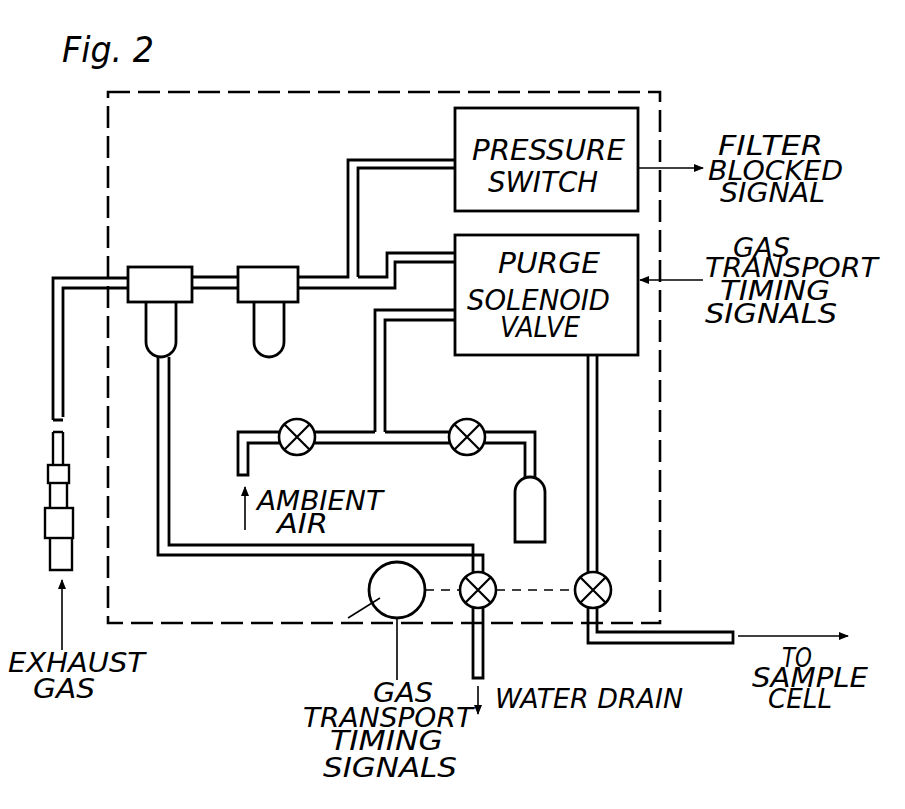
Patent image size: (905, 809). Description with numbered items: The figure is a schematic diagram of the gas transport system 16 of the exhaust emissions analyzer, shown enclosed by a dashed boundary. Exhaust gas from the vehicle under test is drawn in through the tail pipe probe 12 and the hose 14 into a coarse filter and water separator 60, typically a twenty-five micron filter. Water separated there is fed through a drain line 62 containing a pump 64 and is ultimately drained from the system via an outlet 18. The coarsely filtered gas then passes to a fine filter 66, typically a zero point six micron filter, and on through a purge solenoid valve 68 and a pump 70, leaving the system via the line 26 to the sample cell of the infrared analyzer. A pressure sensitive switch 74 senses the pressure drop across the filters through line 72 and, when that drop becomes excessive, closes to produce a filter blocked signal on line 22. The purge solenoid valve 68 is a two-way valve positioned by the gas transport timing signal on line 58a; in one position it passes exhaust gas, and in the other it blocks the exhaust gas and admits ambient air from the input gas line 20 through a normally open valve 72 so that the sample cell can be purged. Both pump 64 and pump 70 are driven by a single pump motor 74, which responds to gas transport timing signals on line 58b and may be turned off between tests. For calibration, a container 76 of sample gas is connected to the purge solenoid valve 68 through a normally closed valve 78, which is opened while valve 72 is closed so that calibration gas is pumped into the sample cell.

The tail pipe probe 12 is at (72, 527).
The hose 14 is at (53, 345).
The gas transport system 16 is at (101, 193).
The outlet 18 is at (486, 648).
The input gas line 20 is at (238, 466).
The line 22 is at (672, 163).
The line 26 is at (667, 645).
The line 58a is at (670, 272).
The line 58b is at (397, 672).
The coarse filter and water separator 60 is at (163, 267).
The drain line 62 is at (232, 552).
The pump 64 is at (498, 578).
The fine filter 66 is at (258, 267).
The purge solenoid valve 68 is at (463, 243).
The pump 70 is at (603, 578).
The line / normally open valve 72 is at (395, 158).
The pressure sensitive switch / pump motor 74 is at (467, 190).
The container 76 is at (515, 497).
The normally closed valve 78 is at (481, 422).